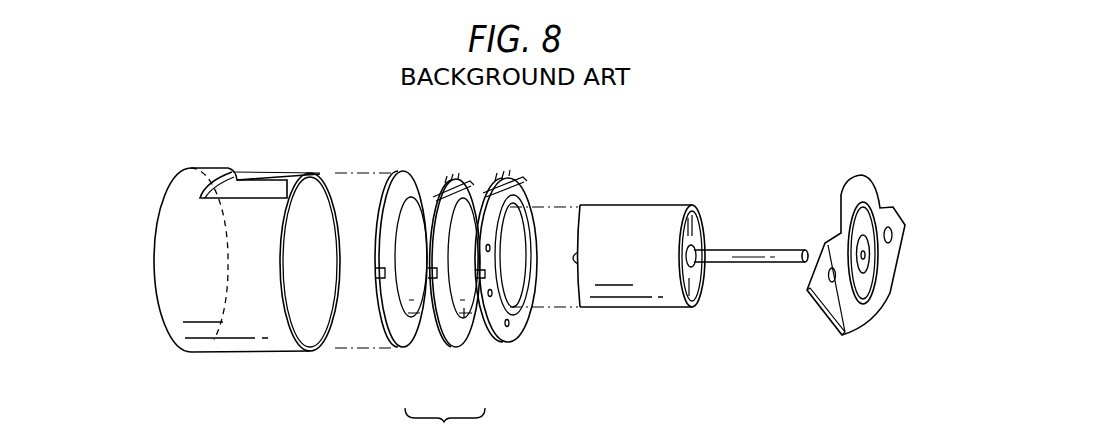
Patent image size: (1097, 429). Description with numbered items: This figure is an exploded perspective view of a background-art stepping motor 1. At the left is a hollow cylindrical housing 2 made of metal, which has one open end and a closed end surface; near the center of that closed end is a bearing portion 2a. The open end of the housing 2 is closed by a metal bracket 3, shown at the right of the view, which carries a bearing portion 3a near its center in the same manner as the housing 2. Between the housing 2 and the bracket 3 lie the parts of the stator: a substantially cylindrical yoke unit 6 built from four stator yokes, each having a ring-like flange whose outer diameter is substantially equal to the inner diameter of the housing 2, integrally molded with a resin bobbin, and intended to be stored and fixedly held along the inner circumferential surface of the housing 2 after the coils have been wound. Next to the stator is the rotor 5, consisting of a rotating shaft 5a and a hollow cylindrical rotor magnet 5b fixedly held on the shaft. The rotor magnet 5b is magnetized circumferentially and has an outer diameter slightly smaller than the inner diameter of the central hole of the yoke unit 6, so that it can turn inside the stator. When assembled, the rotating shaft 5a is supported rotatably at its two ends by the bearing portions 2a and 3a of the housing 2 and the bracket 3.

The stepping motor 1 is at (779, 170).
The hollow cylindrical housing 2 is at (247, 327).
The bearing portion 2a is at (193, 254).
The bracket 3 is at (839, 312).
The bearing portion 3a is at (868, 258).
The rotor 5 is at (668, 314).
The rotating shaft 5a is at (774, 249).
The rotor magnet 5b is at (622, 292).
The yoke unit 6 is at (453, 350).